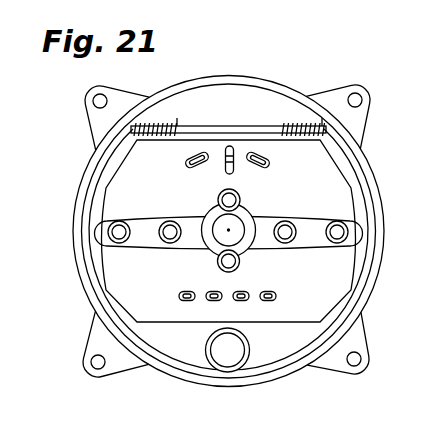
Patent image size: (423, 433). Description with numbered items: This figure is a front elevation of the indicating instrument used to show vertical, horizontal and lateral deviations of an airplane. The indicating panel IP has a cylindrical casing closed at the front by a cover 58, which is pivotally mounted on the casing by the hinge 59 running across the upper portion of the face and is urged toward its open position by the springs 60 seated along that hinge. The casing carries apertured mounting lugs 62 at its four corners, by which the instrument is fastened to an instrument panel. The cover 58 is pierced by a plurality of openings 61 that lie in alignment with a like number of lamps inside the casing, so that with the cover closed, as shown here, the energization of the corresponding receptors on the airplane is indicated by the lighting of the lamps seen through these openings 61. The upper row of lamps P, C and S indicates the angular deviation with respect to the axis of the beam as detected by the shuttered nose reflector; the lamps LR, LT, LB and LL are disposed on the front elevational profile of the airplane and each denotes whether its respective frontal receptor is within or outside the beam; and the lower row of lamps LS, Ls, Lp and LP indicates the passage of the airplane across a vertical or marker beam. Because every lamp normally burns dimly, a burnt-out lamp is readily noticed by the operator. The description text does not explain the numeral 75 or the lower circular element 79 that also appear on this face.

The cover 58 is at (310, 182).
The hinge 59 is at (227, 126).
The springs 60 is at (150, 125).
The openings 61 is at (225, 170).
The mounting lugs 62 is at (369, 97).
The knob 79 is at (213, 371).
The part 75 is at (417, 303).
The indicating panel IP is at (267, 108).
The lamp P is at (187, 161).
The lamp S is at (267, 157).
The lamp C is at (233, 157).
The lamp LT is at (241, 203).
The lamp LB is at (239, 266).
The lamp LR is at (136, 214).
The lamp LL is at (339, 218).
The lamp LS is at (181, 299).
The lamp Ls is at (214, 308).
The lamp Lp is at (245, 308).
The lamp LP is at (270, 301).